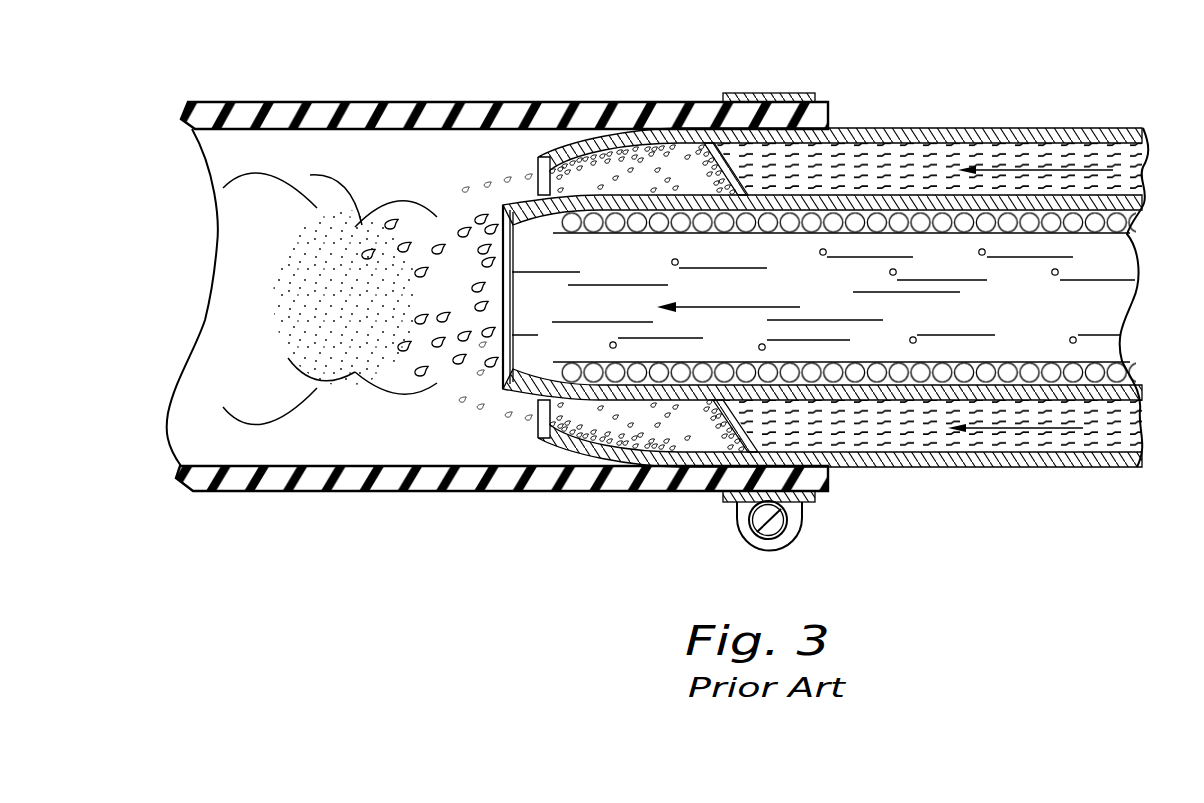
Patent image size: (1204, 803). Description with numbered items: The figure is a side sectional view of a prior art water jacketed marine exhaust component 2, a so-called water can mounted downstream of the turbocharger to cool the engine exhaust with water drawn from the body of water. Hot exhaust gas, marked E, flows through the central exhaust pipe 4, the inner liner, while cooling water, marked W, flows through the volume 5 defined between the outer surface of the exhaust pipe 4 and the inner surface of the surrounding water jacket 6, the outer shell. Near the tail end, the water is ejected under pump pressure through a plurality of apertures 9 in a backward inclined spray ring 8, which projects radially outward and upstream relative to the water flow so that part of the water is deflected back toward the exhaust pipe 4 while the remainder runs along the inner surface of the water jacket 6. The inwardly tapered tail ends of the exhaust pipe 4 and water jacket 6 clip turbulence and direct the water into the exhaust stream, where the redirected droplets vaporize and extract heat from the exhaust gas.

The water jacketed exhaust component 2 is at (851, 248).
The exhaust pipe 4 is at (1083, 194).
The volume 5 is at (1143, 145).
The water jacket 6 is at (1102, 128).
The spray ring 8 is at (738, 152).
The apertures 9 is at (688, 130).